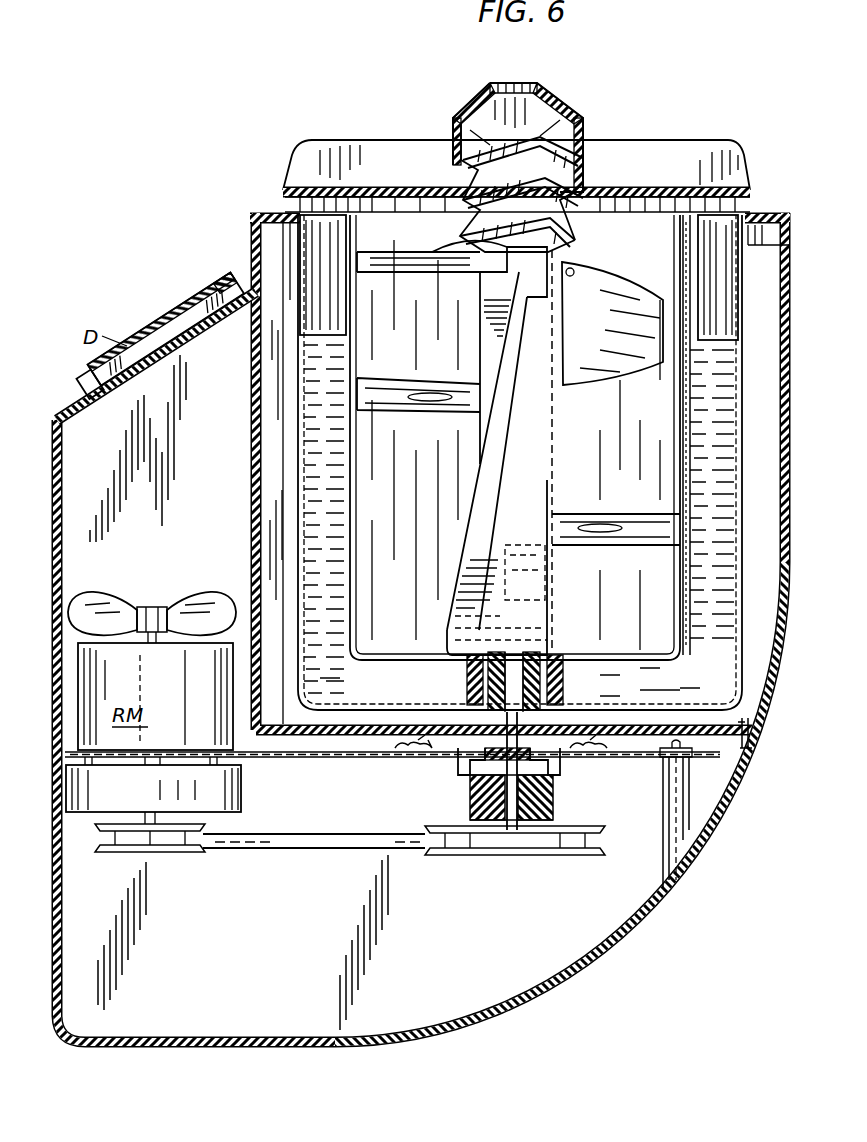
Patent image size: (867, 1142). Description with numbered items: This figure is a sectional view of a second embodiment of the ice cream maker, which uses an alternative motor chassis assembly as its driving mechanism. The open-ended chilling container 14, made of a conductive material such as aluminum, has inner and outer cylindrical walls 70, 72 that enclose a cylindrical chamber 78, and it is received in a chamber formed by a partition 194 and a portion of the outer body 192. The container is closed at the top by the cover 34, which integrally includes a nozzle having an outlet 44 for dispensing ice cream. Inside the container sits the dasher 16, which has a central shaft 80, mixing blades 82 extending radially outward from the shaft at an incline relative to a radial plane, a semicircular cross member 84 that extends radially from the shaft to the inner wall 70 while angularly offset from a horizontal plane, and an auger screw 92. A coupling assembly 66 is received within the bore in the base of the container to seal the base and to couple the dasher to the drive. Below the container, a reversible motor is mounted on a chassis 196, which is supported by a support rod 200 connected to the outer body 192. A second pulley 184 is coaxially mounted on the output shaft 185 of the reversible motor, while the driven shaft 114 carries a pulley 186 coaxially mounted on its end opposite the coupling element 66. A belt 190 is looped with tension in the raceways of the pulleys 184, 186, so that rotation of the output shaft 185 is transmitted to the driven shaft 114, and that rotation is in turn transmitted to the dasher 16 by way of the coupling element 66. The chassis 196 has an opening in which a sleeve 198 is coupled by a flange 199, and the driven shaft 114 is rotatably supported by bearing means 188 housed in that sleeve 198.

The chilling container 14 is at (290, 275).
The dasher 16 is at (560, 264).
The cover 34 is at (700, 135).
The outlet 44 is at (530, 86).
The coupling assembly 66 is at (568, 690).
The inner cylindrical wall 70 is at (680, 262).
The outer cylindrical wall 72 is at (700, 308).
The cylindrical chamber 78 is at (343, 627).
The central shaft 80 is at (513, 380).
The mixing blades 82 is at (415, 398).
The cross member 84 is at (440, 288).
The auger screw 92 is at (560, 120).
The driven shaft 114 is at (520, 803).
The second pulley 184 is at (175, 858).
The output shaft 185 is at (148, 822).
The pulley 186 is at (478, 858).
The bearing means 188 is at (470, 805).
The belt 190 is at (300, 843).
The outer body 192 is at (712, 828).
The partition 194 is at (740, 735).
The chassis 196 is at (256, 522).
The sleeve 198 is at (462, 778).
The flange 199 is at (400, 758).
The support rod 200 is at (675, 848).